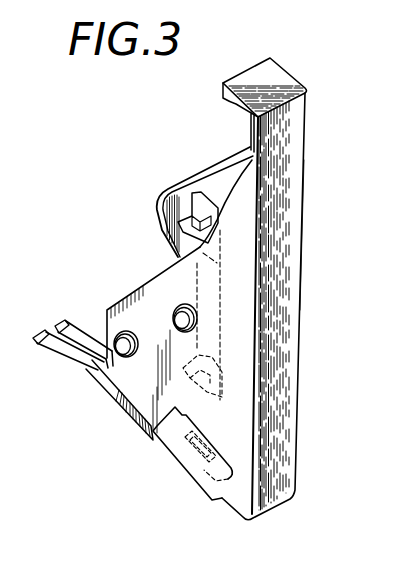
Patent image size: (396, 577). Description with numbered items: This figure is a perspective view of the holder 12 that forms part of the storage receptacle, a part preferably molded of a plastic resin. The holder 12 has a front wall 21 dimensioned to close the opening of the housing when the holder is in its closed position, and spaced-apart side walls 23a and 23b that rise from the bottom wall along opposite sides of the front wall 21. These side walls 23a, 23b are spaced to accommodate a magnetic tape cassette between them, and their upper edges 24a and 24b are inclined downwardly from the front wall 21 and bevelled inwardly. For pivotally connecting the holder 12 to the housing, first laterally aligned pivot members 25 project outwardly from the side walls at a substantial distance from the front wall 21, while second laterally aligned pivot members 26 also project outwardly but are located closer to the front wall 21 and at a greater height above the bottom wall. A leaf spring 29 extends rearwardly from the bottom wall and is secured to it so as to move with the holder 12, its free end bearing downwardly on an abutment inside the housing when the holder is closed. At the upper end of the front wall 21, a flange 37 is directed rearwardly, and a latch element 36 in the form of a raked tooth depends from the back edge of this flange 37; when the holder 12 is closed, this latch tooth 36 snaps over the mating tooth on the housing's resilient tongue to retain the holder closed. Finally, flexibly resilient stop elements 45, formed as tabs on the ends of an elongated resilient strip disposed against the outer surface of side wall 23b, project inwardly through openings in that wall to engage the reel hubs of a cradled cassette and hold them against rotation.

The holder 12 is at (308, 226).
The front wall 21 is at (298, 311).
The side wall 23a is at (217, 422).
The side wall 23b is at (213, 187).
The upper edge 24a is at (130, 297).
The upper edge 24b is at (178, 186).
The first pivot member 25 is at (118, 352).
The second pivot member 26 is at (176, 305).
The leaf spring 29 is at (116, 378).
The latch element 36 is at (222, 99).
The flange 37 is at (278, 72).
The stop element 45 is at (178, 229).